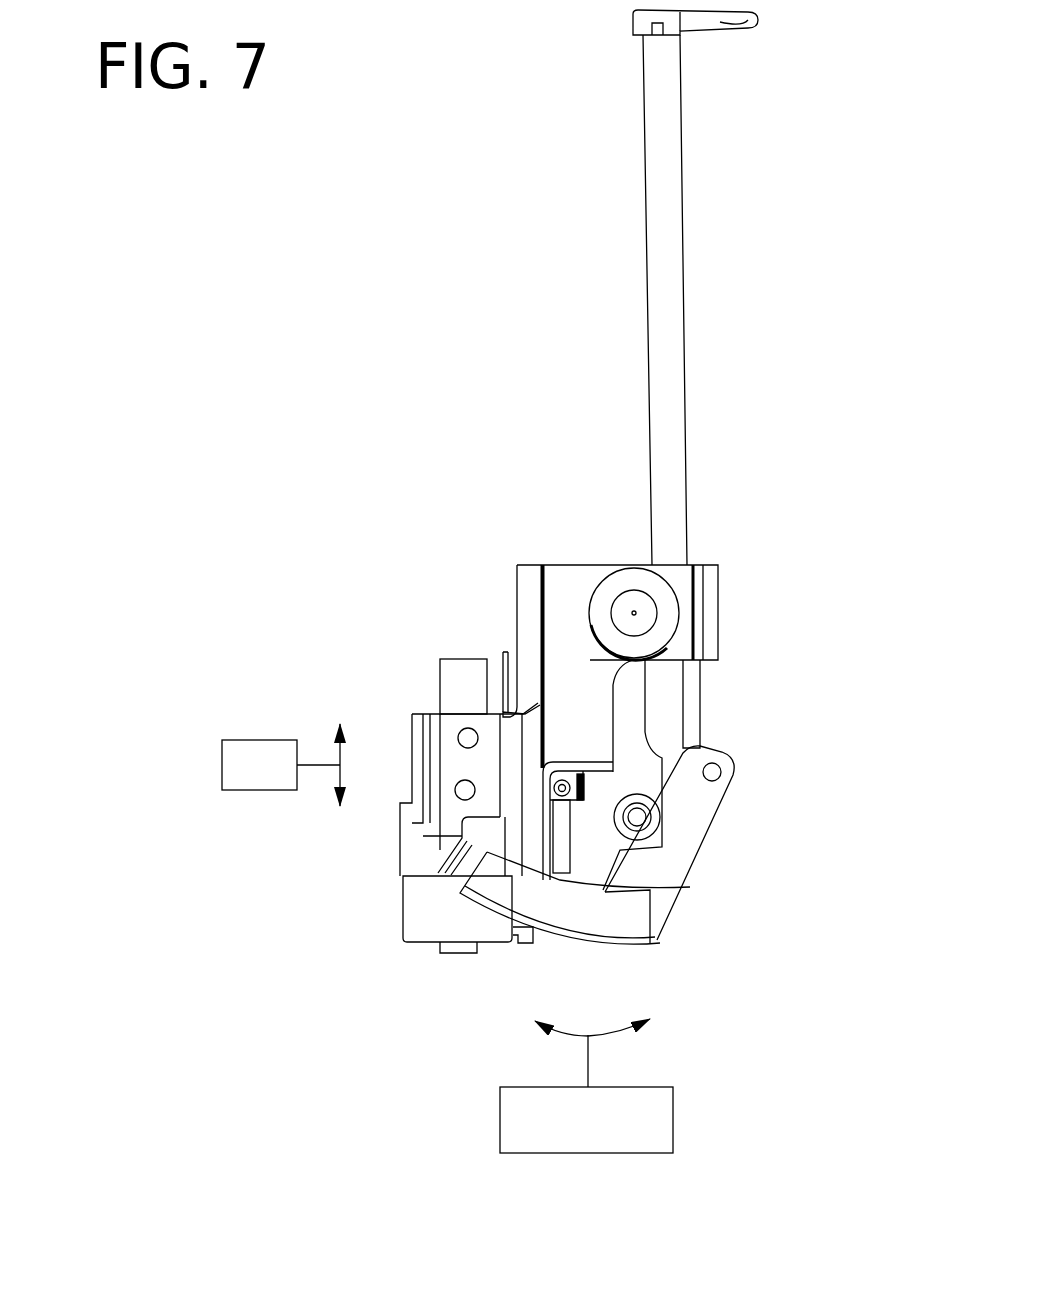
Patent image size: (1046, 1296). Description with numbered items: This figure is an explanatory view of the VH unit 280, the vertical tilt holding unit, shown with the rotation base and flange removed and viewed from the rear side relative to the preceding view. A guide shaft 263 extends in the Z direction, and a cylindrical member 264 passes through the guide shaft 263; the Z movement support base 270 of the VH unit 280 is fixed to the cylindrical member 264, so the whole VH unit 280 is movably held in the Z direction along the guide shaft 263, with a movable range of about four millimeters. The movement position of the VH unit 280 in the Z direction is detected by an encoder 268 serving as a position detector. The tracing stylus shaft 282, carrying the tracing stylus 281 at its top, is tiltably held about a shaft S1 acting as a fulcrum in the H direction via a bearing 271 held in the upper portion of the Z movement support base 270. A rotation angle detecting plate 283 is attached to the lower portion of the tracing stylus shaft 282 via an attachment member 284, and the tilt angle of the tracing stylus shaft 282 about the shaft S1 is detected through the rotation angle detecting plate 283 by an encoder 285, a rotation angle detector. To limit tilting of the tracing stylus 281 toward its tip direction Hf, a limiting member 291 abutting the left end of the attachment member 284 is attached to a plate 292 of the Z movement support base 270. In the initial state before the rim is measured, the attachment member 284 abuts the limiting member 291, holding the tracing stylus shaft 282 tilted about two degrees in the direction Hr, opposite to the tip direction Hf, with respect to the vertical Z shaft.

The VH unit 280 is at (237, 595).
The tracing stylus 281 is at (720, 24).
The tracing stylus shaft 282 is at (681, 95).
The Z movement support base 270 is at (538, 607).
The bearing 271 is at (600, 585).
The shaft S1 is at (636, 611).
The guide shaft 263 is at (440, 690).
The cylindrical member 264 is at (418, 912).
The encoder 268 is at (262, 740).
The plate 292 is at (598, 812).
The limiting member 291 is at (605, 803).
The attachment member 284 is at (700, 822).
The rotation angle detecting plate 283 is at (633, 915).
The encoder 285 is at (657, 1127).
The H direction H is at (610, 205).
The direction Hr is at (660, 205).
The tip direction Hf is at (660, 205).